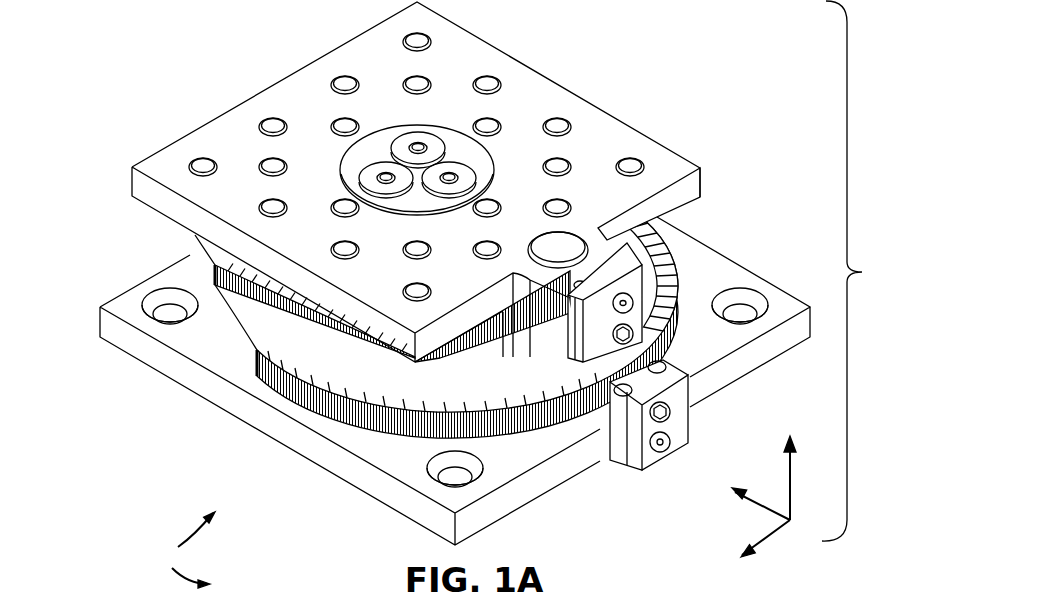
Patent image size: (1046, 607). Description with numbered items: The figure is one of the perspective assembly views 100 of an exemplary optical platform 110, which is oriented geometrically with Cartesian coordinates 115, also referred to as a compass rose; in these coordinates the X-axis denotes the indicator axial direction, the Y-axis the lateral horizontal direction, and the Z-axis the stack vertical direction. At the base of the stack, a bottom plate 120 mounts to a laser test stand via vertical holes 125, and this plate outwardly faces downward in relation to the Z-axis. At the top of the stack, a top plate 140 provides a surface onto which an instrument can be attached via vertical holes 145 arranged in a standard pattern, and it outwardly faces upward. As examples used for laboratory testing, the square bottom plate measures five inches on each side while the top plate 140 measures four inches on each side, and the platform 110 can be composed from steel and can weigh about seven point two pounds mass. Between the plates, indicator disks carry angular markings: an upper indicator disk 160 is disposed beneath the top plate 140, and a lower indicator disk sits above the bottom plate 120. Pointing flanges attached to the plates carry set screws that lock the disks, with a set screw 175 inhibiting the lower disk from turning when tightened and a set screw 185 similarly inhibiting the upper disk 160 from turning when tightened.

The perspective assembly views 100 is at (166, 550).
The optical platform 110 is at (866, 271).
The Cartesian coordinates 115 is at (754, 494).
The bottom plate 120 is at (212, 400).
The vertical holes 125 is at (390, 460).
The top plate 140 is at (617, 114).
The vertical holes 145 is at (270, 120).
The upper indicator disk 160 is at (195, 235).
The set screw 175 is at (690, 430).
The set screw 185 is at (670, 408).